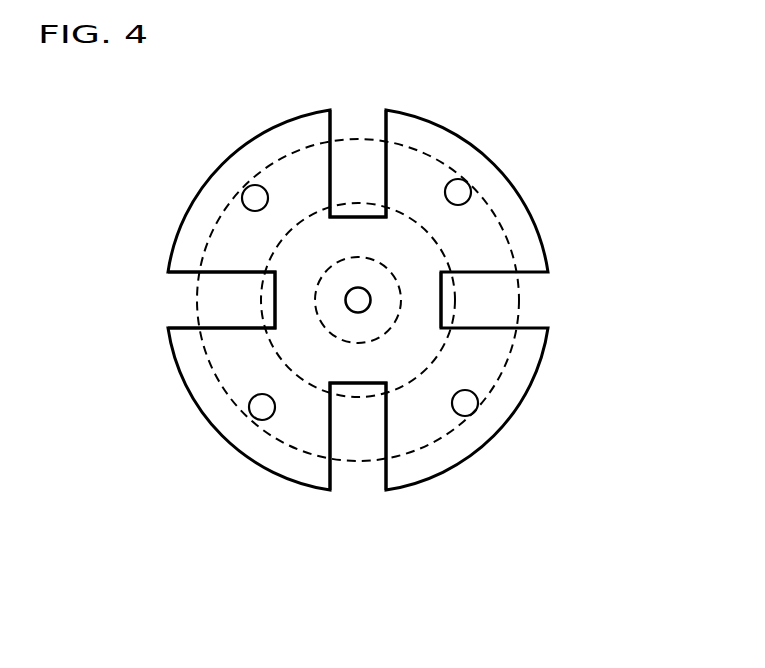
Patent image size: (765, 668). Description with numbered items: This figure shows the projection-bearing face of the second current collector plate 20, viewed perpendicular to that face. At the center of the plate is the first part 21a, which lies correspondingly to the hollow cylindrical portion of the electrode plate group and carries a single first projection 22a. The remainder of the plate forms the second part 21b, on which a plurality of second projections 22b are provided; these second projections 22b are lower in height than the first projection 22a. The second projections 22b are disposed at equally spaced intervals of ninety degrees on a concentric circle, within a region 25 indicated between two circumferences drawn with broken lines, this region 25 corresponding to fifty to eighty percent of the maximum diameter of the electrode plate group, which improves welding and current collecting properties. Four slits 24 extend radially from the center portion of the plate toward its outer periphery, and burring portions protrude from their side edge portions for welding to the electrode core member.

The second current collector plate 20 is at (553, 148).
The first part 21a is at (388, 298).
The second part 21b is at (398, 280).
The first projection 22a is at (360, 295).
The second projections 22b is at (458, 192).
The slit 24 is at (358, 475).
The region 25 is at (275, 352).